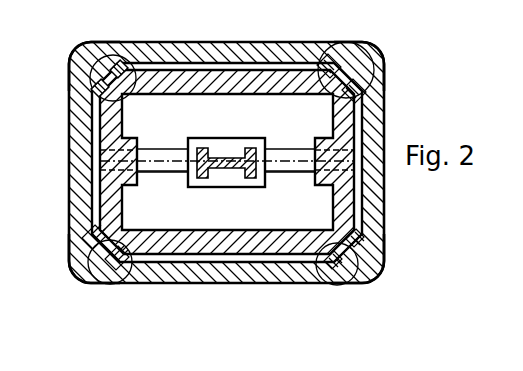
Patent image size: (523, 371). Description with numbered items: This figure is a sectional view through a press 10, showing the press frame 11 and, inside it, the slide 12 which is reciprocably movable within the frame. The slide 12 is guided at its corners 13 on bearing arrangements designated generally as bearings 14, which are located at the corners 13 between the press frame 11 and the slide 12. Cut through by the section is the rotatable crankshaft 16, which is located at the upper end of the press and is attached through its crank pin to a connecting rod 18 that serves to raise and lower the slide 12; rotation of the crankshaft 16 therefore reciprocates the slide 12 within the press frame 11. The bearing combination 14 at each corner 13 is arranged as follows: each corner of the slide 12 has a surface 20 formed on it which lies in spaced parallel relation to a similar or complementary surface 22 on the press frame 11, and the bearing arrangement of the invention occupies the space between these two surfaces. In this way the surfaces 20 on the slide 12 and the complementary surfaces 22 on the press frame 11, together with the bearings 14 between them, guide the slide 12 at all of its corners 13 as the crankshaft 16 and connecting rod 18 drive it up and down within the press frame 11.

The press 10 is at (261, 185).
The press frame 11 is at (233, 44).
The slide 12 is at (290, 96).
The corners 13 is at (378, 57).
The bearing arrangements 14 is at (94, 86).
The crankshaft 16 is at (298, 172).
The connecting rod 18 is at (208, 142).
The surface 20 is at (113, 55).
The complementary surface 22 is at (130, 62).